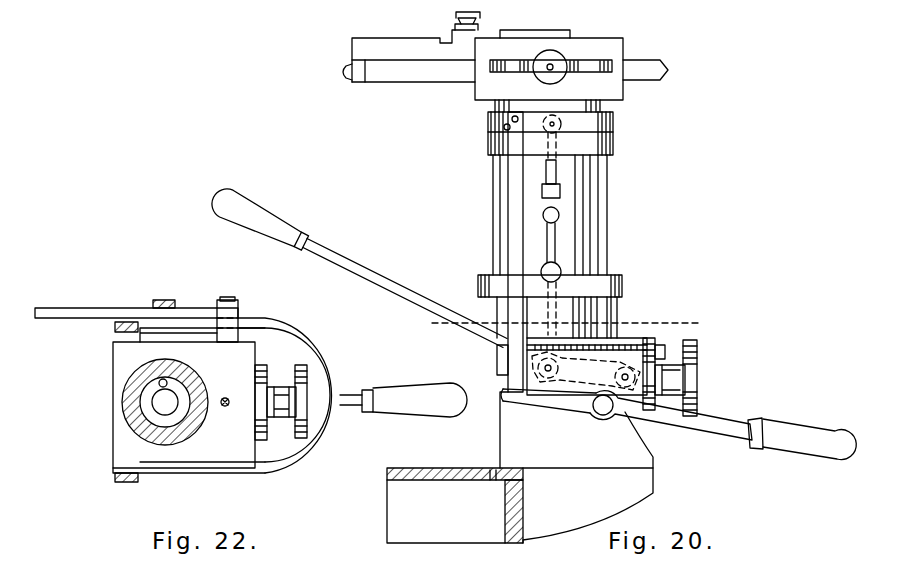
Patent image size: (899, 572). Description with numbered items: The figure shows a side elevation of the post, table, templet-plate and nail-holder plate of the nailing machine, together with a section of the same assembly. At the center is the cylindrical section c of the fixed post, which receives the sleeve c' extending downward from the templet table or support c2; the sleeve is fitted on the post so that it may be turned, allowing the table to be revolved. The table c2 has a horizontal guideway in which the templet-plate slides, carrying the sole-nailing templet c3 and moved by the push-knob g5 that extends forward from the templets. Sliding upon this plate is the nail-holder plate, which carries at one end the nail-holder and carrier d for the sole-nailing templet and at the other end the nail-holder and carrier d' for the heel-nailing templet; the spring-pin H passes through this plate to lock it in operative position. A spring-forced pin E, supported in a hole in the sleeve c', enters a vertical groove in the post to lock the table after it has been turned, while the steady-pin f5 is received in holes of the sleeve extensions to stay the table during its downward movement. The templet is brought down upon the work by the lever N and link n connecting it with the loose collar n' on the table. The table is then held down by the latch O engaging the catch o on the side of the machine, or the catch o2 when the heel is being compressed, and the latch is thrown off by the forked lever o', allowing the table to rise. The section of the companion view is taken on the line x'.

In FIG. 20, the nail-holder and carrier d is at (413, 45).
In FIG. 20, the spring-pin H is at (477, 20).
In FIG. 20, the nail-holder and carrier d' is at (535, 21).
In FIG. 20, the push-knob g5 is at (668, 70).
In FIG. 20, the sole-nailing templet c3 is at (380, 74).
In FIG. 20, the templet table or support c2 is at (549, 69).
In FIG. 20, the loose collar n' is at (564, 133).
In FIG. 20, the sleeve c' is at (550, 215).
In FIG. 20, the latch O is at (508, 238).
In FIG. 22, the latch O is at (136, 314).
In FIG. 20, the pin E is at (557, 170).
In FIG. 20, the cylindrical section of post c is at (550, 306).
In FIG. 20, the steady-pin f5 is at (617, 310).
In FIG. 20, the axis line x' is at (552, 318).
In FIG. 20, the catch o is at (491, 360).
In FIG. 22, the catch o is at (115, 477).
In FIG. 20, the forked lever o' is at (678, 424).
In FIG. 22, the forked lever o' is at (352, 395).
In FIG. 22, the lever N is at (84, 300).
In FIG. 22, the link n is at (175, 295).
In FIG. 22, the catch o2 is at (115, 334).